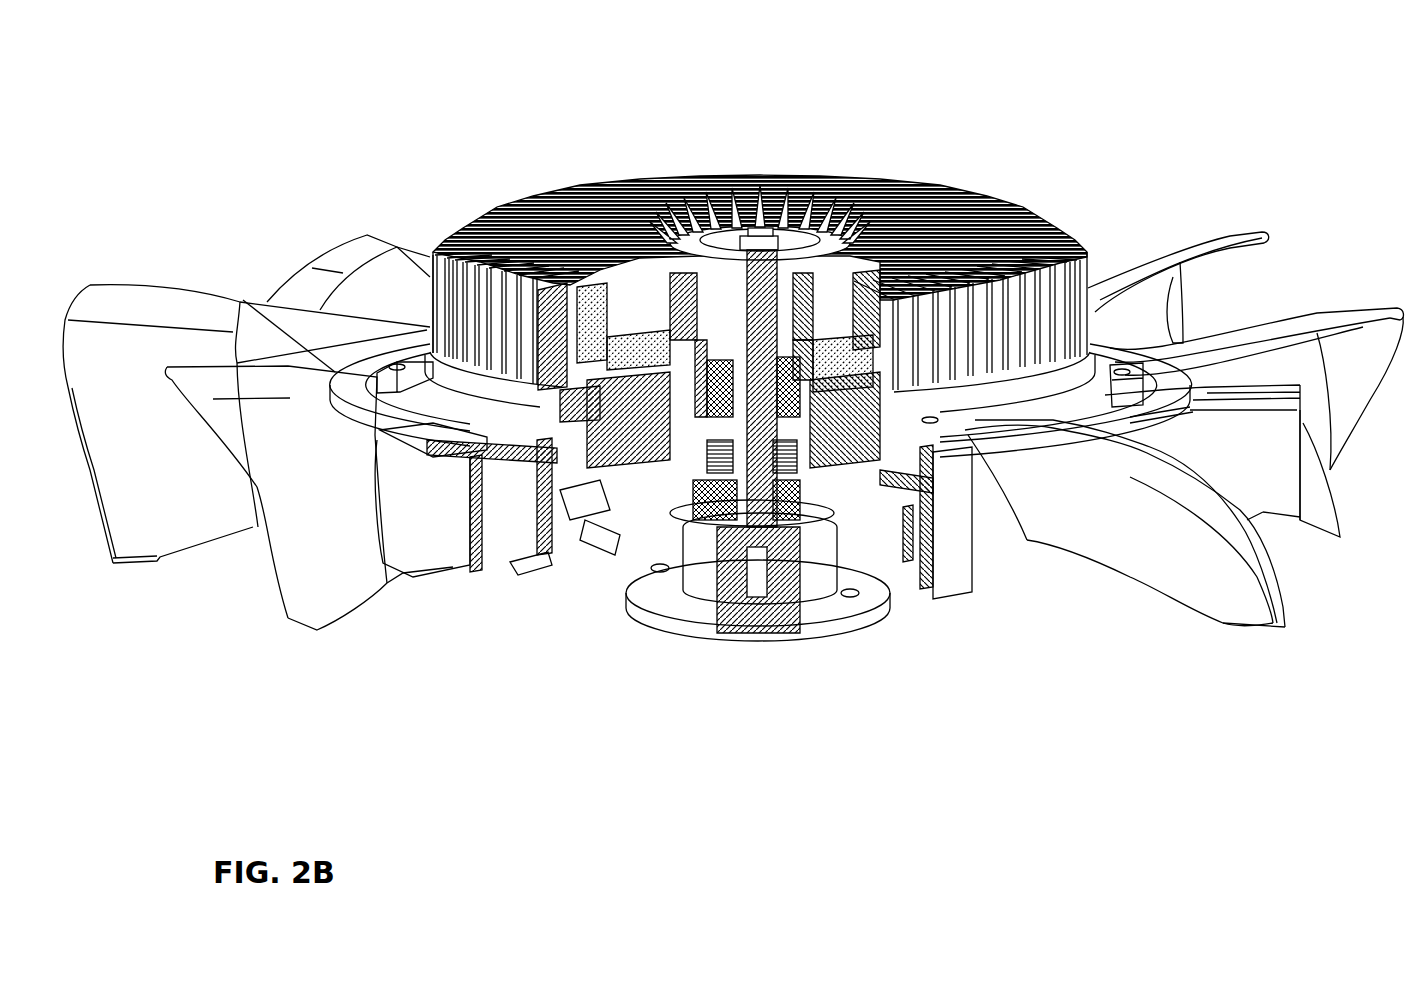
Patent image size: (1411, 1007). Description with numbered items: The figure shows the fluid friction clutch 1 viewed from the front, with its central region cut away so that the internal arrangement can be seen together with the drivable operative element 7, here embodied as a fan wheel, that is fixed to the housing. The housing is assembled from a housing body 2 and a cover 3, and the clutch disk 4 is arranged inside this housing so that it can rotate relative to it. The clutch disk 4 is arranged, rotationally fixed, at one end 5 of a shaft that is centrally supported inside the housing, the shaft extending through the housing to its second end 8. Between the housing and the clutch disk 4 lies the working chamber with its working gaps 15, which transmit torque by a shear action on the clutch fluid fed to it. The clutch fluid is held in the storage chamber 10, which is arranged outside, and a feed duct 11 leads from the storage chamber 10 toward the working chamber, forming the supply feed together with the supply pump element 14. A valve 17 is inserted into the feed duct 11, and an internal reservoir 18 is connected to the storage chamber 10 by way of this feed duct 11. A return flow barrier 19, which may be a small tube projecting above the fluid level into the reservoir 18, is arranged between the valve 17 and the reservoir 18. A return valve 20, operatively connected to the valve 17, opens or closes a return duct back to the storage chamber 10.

The fluid friction clutch 1 is at (1248, 93).
The housing body 2 is at (1020, 400).
The cover 3 is at (1010, 217).
The clutch disk 4 is at (855, 300).
The end of the shaft 5 is at (767, 290).
The operative element 7 is at (1317, 287).
The second end of the shaft 8 is at (740, 540).
The storage chamber 10 is at (690, 380).
The feed duct 11 is at (590, 345).
The supply pump element 14 is at (622, 372).
The working gaps 15 is at (648, 352).
The valve 17 is at (672, 330).
The internal reservoir 18 is at (705, 482).
The return flow barrier 19 is at (712, 450).
The return valve 20 is at (820, 430).